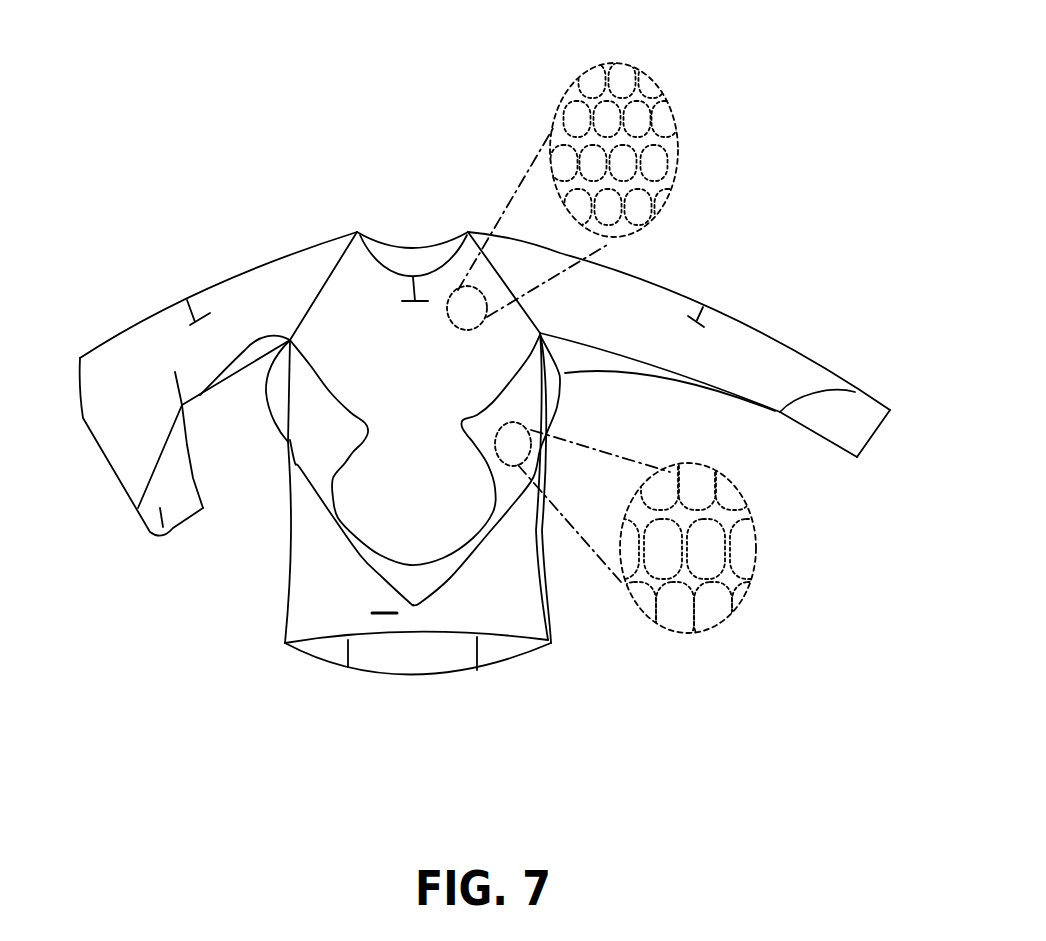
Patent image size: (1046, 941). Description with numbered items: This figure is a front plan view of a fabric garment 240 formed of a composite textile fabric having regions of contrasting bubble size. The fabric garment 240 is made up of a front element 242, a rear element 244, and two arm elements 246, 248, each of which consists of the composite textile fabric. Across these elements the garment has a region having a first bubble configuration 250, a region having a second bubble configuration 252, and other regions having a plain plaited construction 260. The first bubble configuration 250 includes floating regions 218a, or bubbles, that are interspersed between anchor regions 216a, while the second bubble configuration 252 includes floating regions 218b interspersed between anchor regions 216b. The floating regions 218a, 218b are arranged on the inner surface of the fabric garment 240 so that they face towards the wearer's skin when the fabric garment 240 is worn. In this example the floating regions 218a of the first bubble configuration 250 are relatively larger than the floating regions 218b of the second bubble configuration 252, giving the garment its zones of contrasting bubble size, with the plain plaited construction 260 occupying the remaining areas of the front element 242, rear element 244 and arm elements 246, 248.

The fabric garment 240 is at (208, 98).
The front element 242 is at (303, 613).
The rear element 244 is at (410, 653).
The arm element 246 is at (148, 351).
The arm element 248 is at (763, 340).
The first bubble configuration 250 is at (413, 277).
The second bubble configuration 252 is at (323, 438).
The plain plaited construction 260 is at (160, 530).
The anchor regions 216a is at (572, 80).
The anchor regions 216b is at (740, 510).
The floating regions 218a is at (678, 97).
The floating regions 218b is at (677, 640).